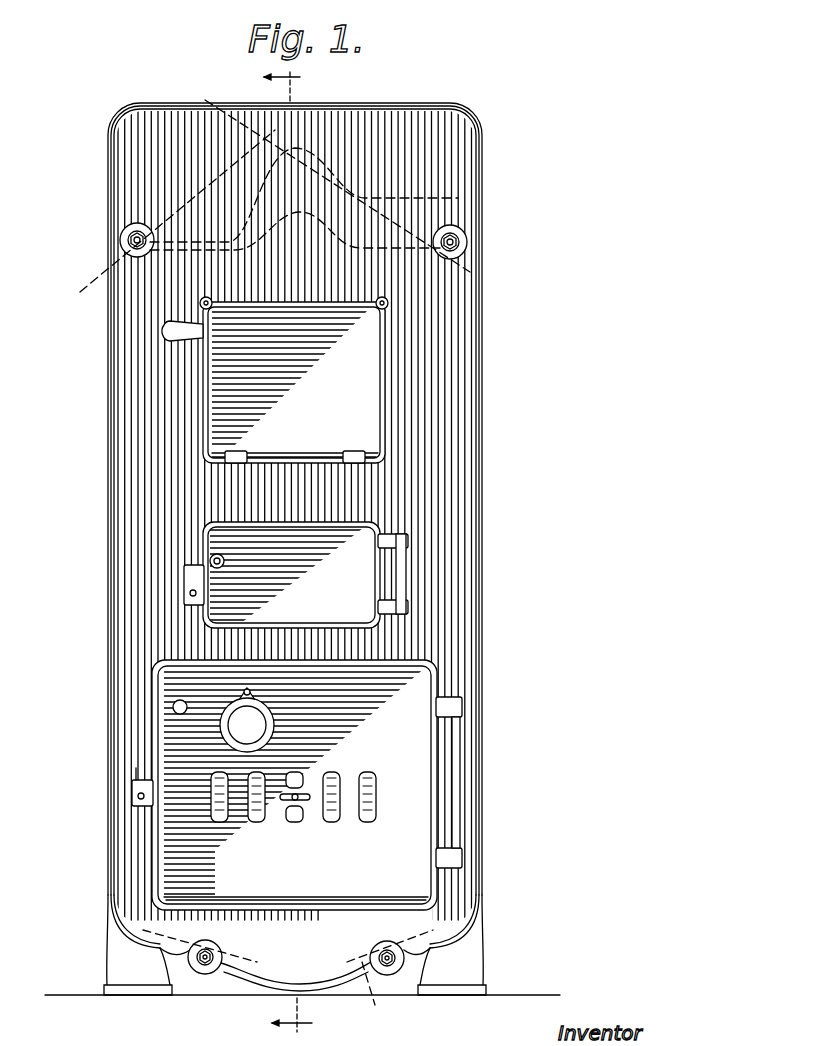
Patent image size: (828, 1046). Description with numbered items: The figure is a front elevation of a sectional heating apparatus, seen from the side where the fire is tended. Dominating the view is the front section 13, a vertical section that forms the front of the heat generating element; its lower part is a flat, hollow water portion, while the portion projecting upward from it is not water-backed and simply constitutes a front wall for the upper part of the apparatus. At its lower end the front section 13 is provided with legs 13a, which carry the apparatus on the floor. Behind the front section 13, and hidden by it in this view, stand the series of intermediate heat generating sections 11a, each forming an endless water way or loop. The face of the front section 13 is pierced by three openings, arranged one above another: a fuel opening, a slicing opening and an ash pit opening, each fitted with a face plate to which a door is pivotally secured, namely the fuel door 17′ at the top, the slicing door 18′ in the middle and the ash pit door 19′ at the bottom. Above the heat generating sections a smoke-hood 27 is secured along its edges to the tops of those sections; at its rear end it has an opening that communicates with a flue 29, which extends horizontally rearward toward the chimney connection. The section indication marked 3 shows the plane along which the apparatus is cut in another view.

The front section 13 is at (498, 803).
The legs 13a is at (130, 965).
The intermediate heat generating sections 11a is at (299, 575).
The fuel door 17′ is at (275, 380).
The slicing door 18′ is at (296, 575).
The ash pit door 19′ is at (297, 785).
The smoke-hood 27 is at (482, 188).
The flue 29 is at (332, 174).
The section line 3 is at (284, 552).